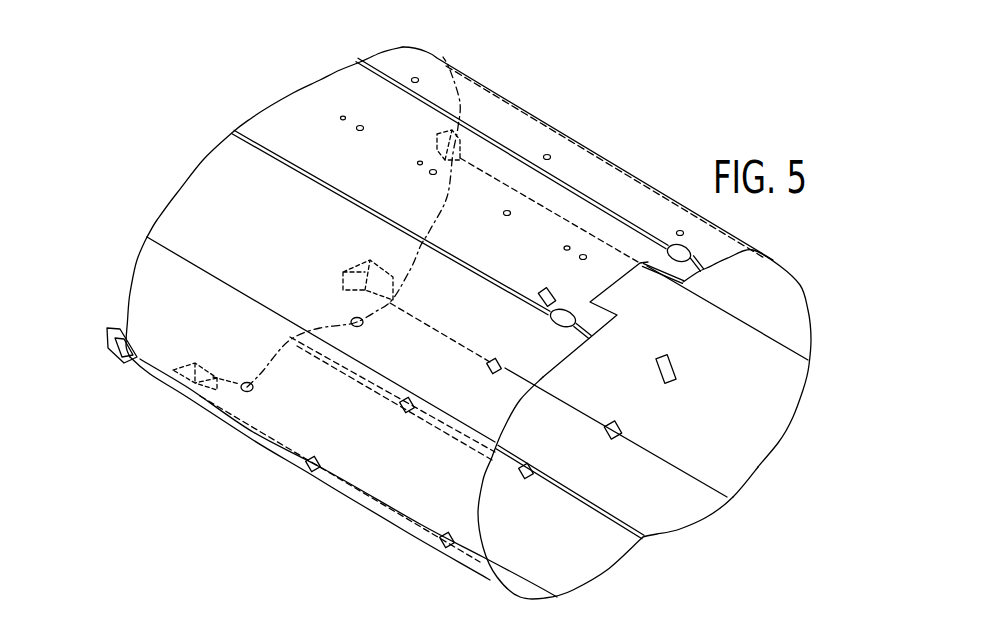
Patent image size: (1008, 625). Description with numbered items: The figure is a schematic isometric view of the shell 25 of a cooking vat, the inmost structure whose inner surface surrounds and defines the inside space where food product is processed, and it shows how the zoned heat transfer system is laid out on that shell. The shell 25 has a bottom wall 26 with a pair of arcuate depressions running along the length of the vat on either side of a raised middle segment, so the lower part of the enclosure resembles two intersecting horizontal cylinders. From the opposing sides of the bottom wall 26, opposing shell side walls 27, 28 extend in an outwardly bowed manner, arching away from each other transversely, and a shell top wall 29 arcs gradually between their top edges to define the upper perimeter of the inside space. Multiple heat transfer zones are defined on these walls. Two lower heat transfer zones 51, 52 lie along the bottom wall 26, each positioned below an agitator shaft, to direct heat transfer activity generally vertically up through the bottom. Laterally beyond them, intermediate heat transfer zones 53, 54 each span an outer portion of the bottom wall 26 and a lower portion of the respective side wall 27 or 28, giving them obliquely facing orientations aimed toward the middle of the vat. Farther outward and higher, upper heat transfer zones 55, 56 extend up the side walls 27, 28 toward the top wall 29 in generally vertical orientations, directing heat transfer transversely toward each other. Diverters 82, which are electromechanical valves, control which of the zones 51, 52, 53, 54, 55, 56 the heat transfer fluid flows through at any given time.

The shell 25 is at (274, 79).
The bottom wall 26 is at (652, 549).
The shell side wall 27 is at (143, 248).
The shell side wall 28 is at (822, 298).
The shell top wall 29 is at (340, 77).
The lower heat transfer zone 51 is at (580, 577).
The lower heat transfer zone 52 is at (700, 512).
The intermediate heat transfer zone 53 is at (157, 380).
The intermediate heat transfer zone 54 is at (762, 452).
The upper heat transfer zone 55 is at (143, 303).
The upper heat transfer zone 56 is at (808, 336).
The diverters 82 is at (118, 350).